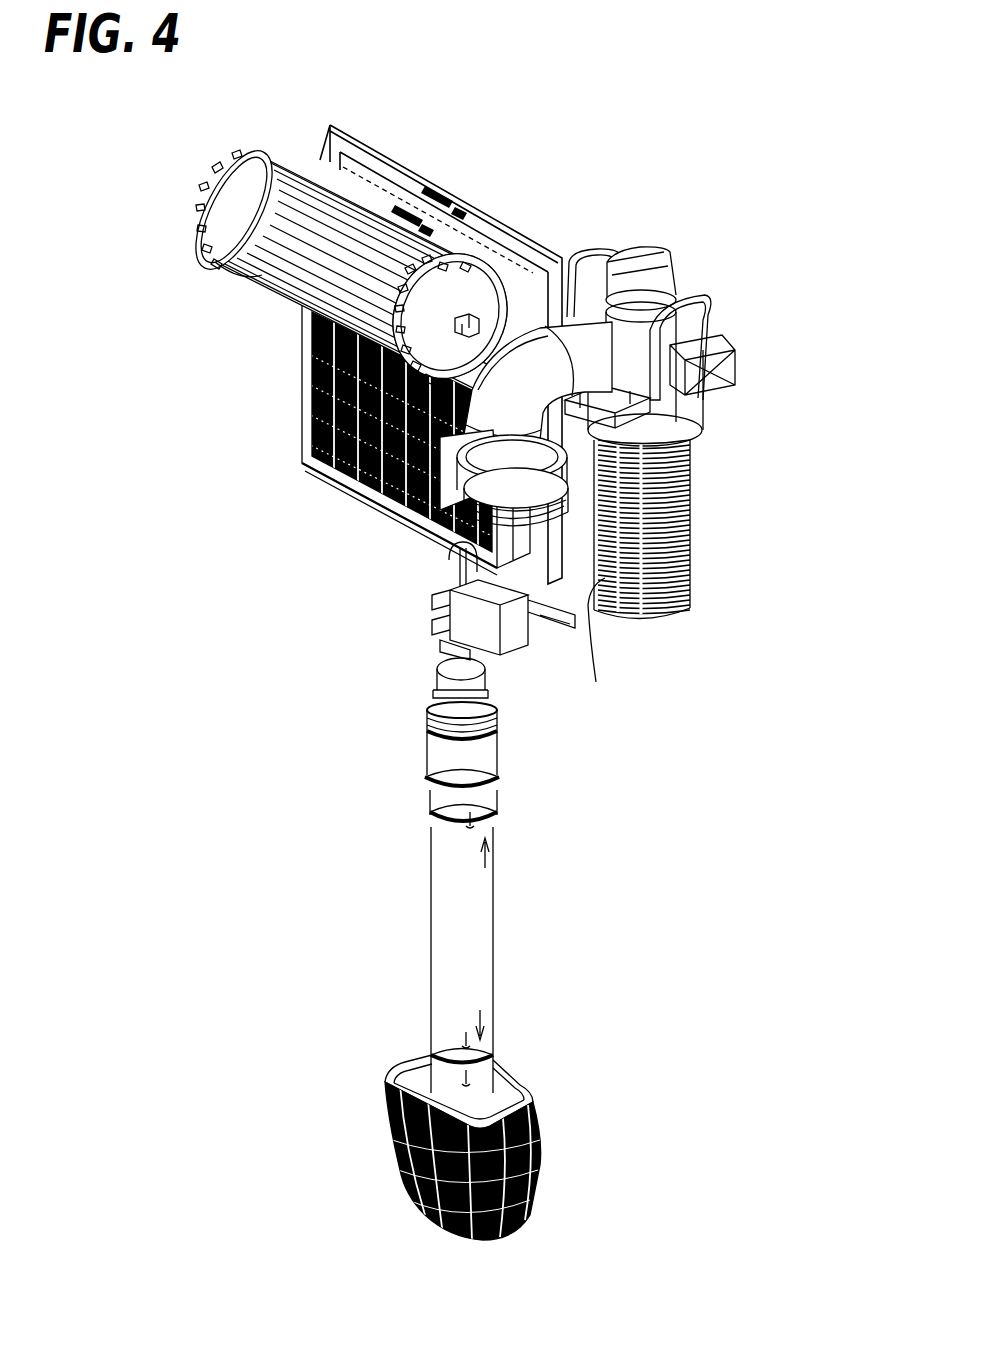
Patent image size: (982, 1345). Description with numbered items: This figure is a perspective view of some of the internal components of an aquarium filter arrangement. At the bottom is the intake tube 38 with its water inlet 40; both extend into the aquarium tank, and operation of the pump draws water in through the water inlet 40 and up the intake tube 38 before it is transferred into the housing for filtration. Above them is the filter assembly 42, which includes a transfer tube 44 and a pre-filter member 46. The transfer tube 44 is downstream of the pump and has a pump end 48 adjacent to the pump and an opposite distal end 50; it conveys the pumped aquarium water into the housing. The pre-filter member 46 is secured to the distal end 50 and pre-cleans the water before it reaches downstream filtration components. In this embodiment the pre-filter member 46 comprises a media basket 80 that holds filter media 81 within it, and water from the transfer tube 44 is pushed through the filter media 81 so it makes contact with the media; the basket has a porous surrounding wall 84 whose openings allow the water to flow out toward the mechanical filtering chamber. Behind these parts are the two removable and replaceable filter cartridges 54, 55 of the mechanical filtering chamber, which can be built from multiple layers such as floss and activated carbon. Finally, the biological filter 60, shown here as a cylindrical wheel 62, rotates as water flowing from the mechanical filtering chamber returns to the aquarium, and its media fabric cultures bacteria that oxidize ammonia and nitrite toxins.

The intake tube 38 is at (483, 932).
The water inlet 40 is at (530, 1183).
The filter assembly 42 is at (714, 258).
The transfer tube 44 is at (585, 330).
The pre-filter member 46 is at (709, 529).
The pump end 48 is at (393, 516).
The distal end 50 is at (712, 346).
The filter cartridge 54 is at (368, 168).
The filter cartridge 55 is at (315, 396).
The biological filter 60 is at (180, 222).
The cylindrical wheel 62 is at (248, 172).
The media basket 80 is at (688, 580).
The filter media 81 is at (690, 548).
The porous surrounding wall 84 is at (591, 647).